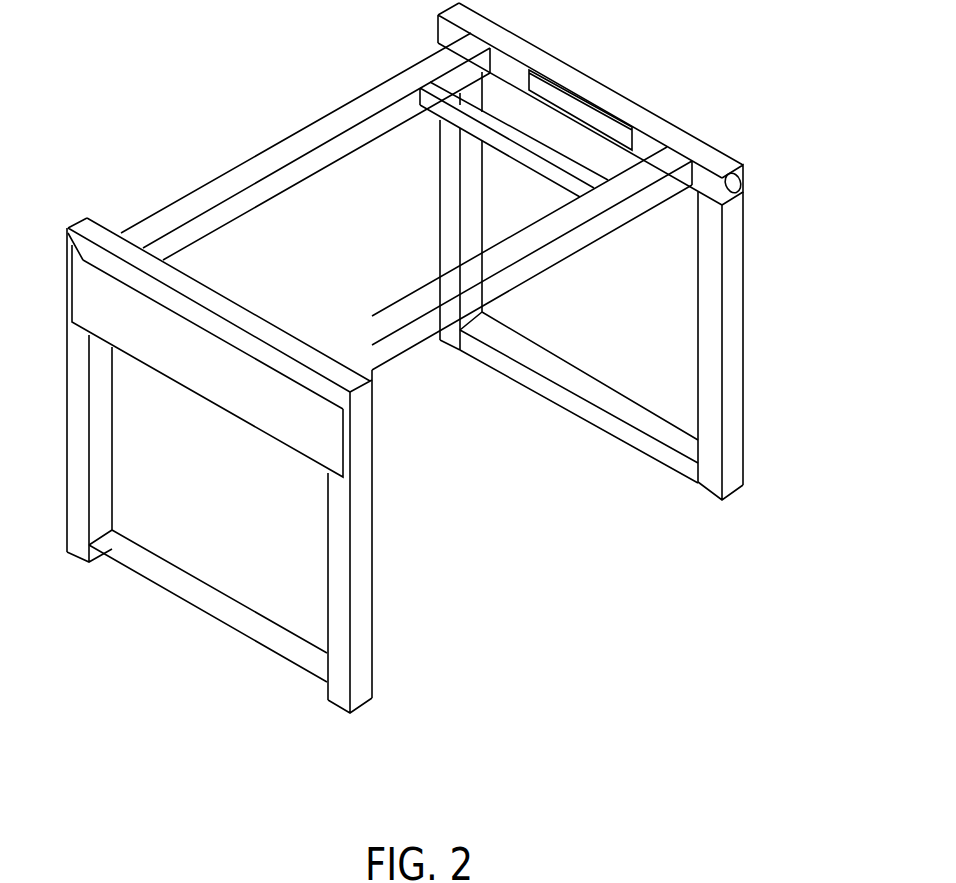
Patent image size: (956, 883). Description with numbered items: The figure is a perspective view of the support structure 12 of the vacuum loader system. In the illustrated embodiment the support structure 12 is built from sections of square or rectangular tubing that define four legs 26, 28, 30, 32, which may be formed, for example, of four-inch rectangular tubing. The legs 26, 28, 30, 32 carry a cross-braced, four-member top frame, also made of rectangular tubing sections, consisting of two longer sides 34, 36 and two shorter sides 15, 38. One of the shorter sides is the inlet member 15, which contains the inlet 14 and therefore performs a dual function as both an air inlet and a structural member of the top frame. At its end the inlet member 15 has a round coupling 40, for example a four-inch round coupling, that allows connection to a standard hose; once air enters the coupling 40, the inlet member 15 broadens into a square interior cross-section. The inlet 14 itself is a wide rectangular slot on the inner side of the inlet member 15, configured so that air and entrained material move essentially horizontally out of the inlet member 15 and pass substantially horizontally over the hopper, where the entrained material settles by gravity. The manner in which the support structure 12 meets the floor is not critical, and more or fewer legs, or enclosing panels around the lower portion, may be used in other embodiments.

The support structure 12 is at (66, 224).
The inlet 14 is at (582, 112).
The inlet member 15 is at (648, 118).
The leg 26 is at (357, 607).
The leg 28 is at (105, 466).
The leg 30 is at (735, 373).
The leg 32 is at (447, 192).
The longer side 34 is at (413, 340).
The longer side 36 is at (222, 180).
The shorter side 38 is at (233, 300).
The round coupling 40 is at (740, 184).